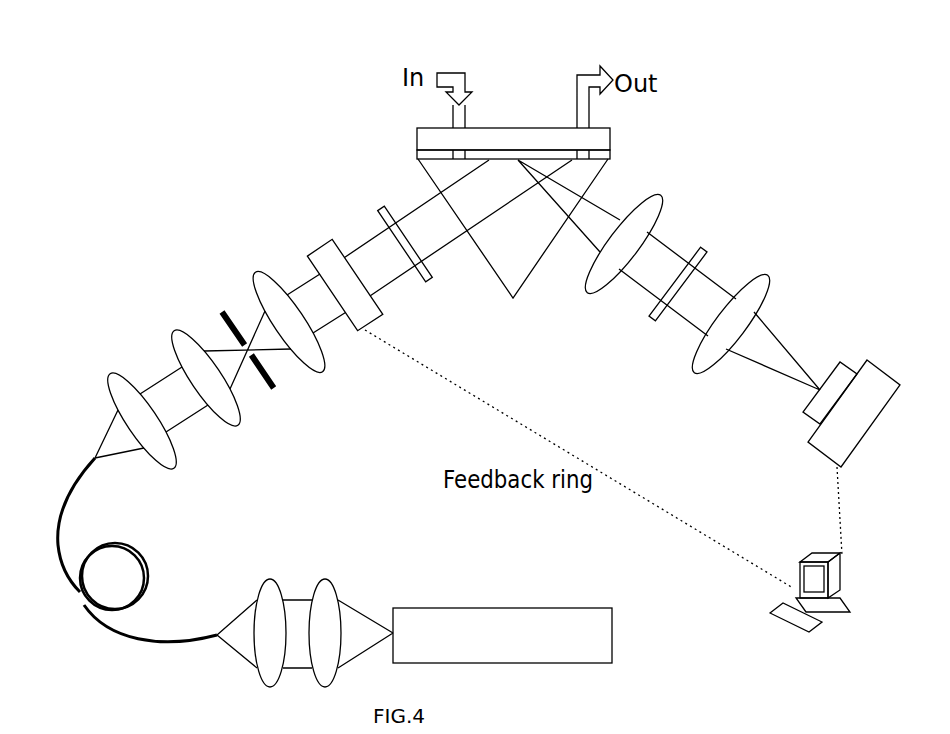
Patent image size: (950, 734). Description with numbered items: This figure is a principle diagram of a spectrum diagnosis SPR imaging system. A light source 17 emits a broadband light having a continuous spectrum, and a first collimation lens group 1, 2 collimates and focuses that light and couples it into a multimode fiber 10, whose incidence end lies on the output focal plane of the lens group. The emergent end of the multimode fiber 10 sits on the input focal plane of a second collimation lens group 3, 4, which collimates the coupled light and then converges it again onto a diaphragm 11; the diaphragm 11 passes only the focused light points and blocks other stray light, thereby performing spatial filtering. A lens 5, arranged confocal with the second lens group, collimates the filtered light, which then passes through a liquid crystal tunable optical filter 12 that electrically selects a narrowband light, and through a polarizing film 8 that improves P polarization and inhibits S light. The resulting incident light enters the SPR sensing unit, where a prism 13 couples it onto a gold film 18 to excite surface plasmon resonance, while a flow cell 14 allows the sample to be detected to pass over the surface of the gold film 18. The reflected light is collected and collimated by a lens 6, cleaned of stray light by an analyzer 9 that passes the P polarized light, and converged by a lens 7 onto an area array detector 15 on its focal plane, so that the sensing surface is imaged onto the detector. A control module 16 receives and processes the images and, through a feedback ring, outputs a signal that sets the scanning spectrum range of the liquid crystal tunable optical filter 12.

The lens L1 of first collimation lens group 1 is at (323, 580).
The lens L2 of first collimation lens group 2 is at (267, 579).
The lens L3 of second collimation lens group 3 is at (112, 370).
The lens L4 of second collimation lens group 4 is at (176, 332).
The lens L5 5 is at (258, 274).
The lens L6 6 is at (661, 195).
The lens L7 7 is at (768, 277).
The polarizing film P1 8 is at (387, 208).
The analyzer P2 9 is at (704, 249).
The multimode fiber 10 is at (73, 577).
The diaphragm DA 11 is at (224, 311).
The liquid crystal tunable optical filter 12 is at (330, 242).
The prism 13 is at (432, 180).
The flow cell 14 is at (513, 128).
The area array detector 15 is at (870, 362).
The control module 16 is at (840, 560).
The light source 17 is at (440, 606).
The gold film 18 is at (433, 152).